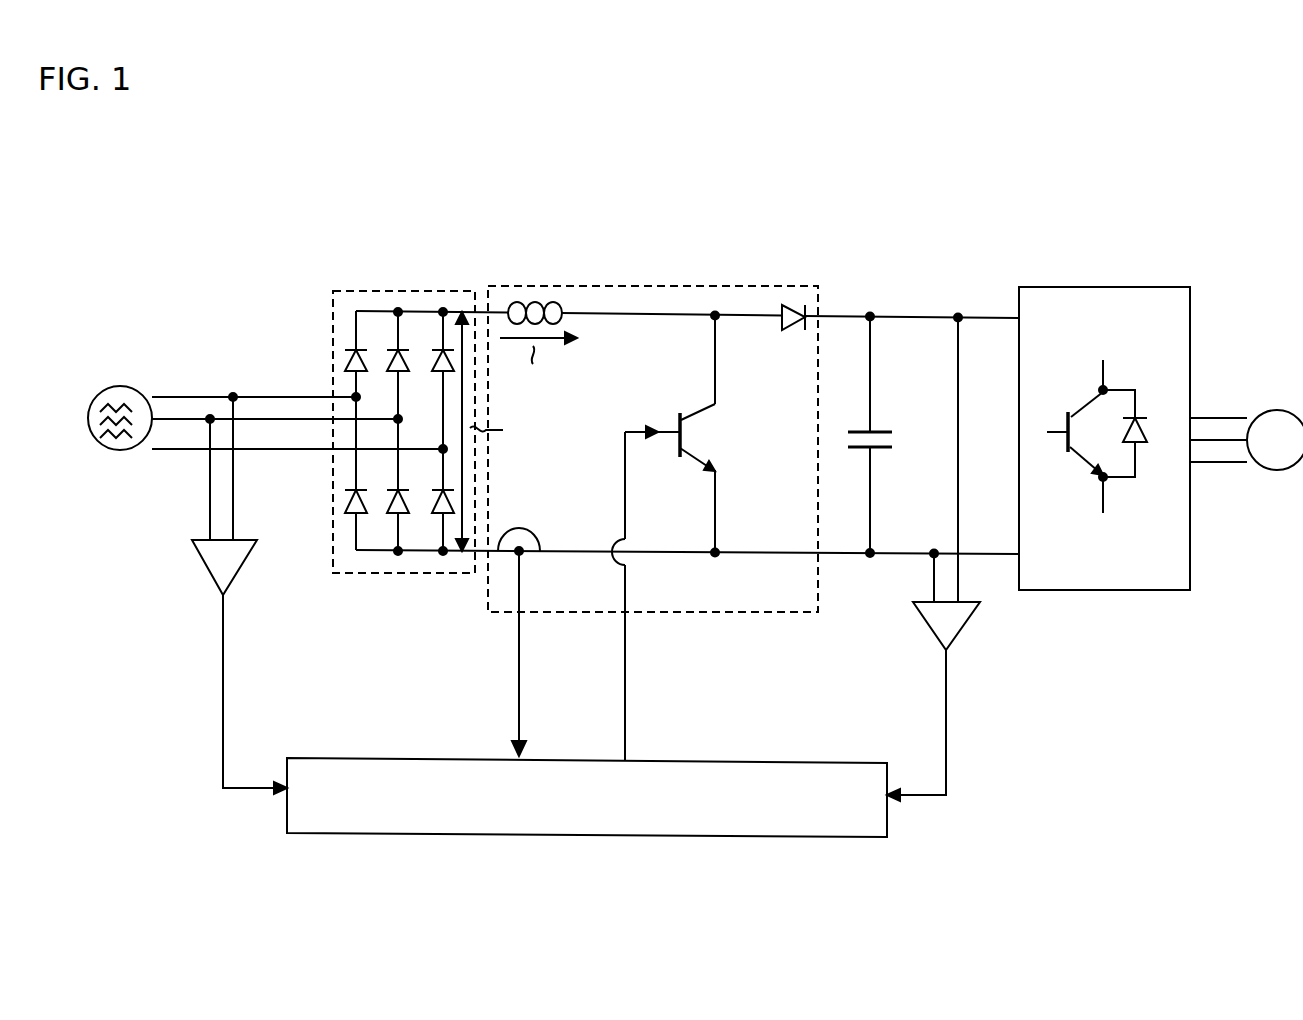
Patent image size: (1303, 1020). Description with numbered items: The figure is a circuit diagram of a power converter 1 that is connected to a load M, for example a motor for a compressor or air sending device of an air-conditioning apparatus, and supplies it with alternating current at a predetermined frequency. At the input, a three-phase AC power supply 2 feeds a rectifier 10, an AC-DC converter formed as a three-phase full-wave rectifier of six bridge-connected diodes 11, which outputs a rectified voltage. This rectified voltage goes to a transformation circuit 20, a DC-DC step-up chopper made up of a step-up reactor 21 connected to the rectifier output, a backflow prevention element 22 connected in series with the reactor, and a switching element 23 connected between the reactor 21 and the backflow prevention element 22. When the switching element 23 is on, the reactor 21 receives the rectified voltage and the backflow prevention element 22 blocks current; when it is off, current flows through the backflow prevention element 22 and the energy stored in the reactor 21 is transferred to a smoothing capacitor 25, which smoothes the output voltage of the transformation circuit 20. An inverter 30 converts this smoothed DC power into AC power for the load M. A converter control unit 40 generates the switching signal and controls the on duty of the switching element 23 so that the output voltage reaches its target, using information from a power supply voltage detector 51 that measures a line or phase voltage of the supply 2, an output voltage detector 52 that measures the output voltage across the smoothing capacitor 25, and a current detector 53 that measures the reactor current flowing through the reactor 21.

The power converter 1 is at (585, 227).
The three-phase AC power supply 2 is at (119, 387).
The rectifier 10 is at (406, 292).
The diode 11 is at (344, 357).
The transformation circuit 20 is at (660, 286).
The reactor 21 is at (526, 302).
The backflow prevention element 22 is at (785, 332).
The switching element 23 is at (681, 412).
The smoothing capacitor 25 is at (892, 452).
The inverter 30 is at (1108, 286).
The converter control unit 40 is at (430, 757).
The power supply voltage detector 51 is at (242, 574).
The output voltage detector 52 is at (965, 632).
The current detector 53 is at (523, 558).